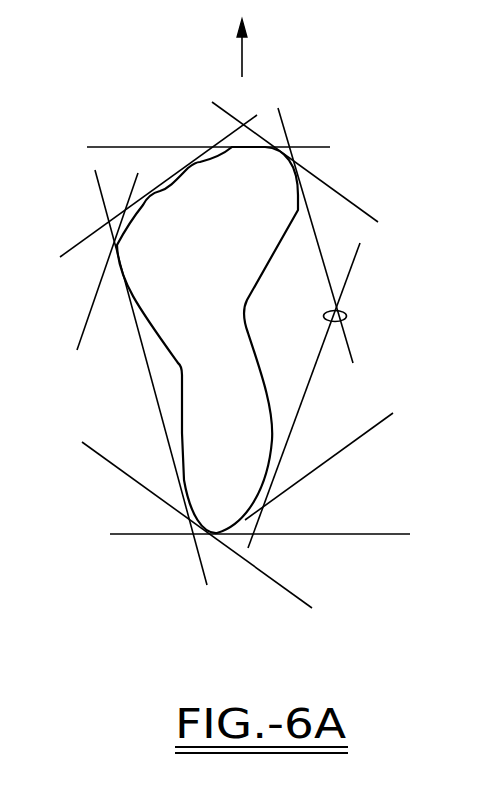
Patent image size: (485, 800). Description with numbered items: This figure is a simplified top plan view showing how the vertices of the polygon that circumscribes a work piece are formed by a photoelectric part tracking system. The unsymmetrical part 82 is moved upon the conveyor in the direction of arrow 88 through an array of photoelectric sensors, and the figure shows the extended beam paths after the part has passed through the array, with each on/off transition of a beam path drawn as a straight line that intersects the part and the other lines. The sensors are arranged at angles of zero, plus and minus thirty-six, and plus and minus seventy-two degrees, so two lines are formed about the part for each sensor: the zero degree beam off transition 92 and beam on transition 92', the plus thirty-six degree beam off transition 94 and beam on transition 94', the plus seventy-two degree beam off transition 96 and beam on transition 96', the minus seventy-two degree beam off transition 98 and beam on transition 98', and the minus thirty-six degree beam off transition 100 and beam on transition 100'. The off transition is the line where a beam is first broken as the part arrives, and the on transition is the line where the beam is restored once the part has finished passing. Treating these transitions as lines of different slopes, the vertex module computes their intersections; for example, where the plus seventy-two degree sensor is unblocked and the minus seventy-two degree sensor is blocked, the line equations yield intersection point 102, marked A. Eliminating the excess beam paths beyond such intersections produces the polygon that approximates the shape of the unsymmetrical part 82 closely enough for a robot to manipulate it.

The unsymmetrical part 82 is at (200, 277).
The arrow 88 is at (241, 53).
The 0° beam off transition 92 is at (203, 125).
The 0° beam on transition 92' is at (260, 560).
The +36° beam off transition 94 is at (144, 186).
The +36° beam on transition 94' is at (319, 466).
The +72° beam off transition 96 is at (85, 261).
The +72° beam on transition 96' is at (307, 395).
The −72° beam off transition 98 is at (353, 235).
The −72° beam on transition 98' is at (141, 377).
The −36° beam off transition 100 is at (320, 162).
The −36° beam on transition 100' is at (175, 525).
The intersection point 102 is at (343, 308).